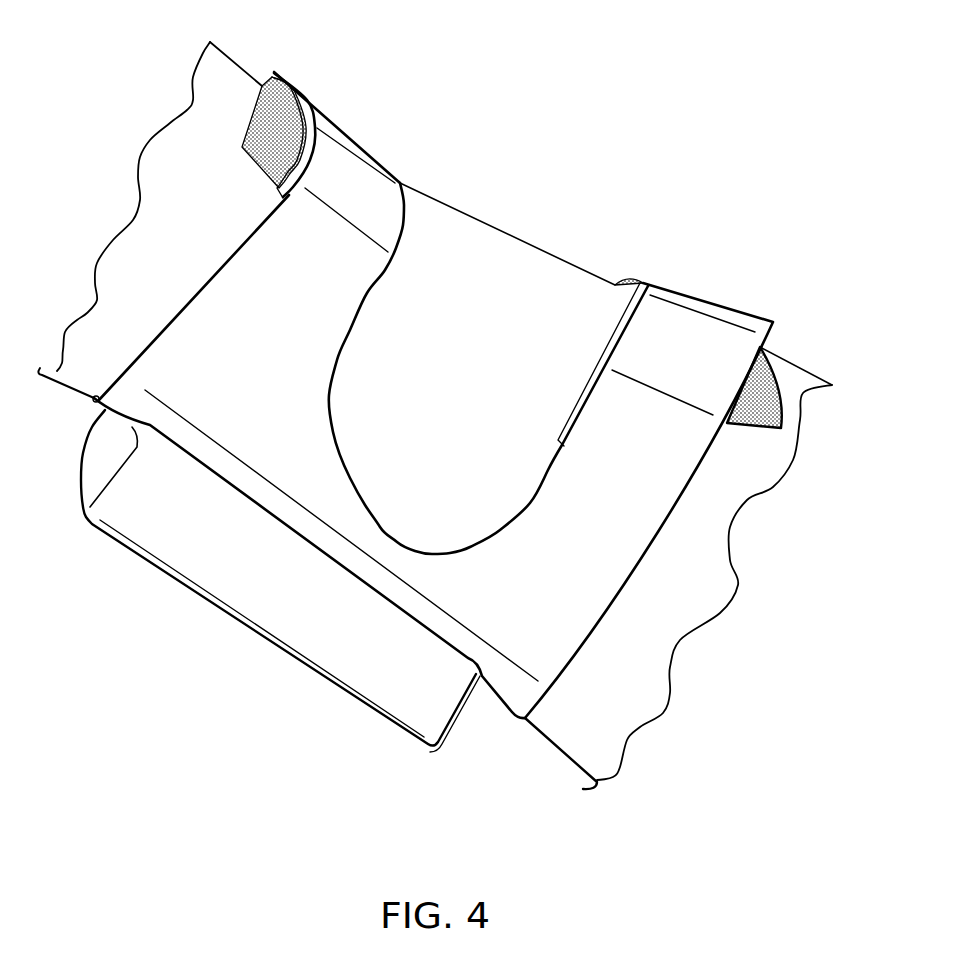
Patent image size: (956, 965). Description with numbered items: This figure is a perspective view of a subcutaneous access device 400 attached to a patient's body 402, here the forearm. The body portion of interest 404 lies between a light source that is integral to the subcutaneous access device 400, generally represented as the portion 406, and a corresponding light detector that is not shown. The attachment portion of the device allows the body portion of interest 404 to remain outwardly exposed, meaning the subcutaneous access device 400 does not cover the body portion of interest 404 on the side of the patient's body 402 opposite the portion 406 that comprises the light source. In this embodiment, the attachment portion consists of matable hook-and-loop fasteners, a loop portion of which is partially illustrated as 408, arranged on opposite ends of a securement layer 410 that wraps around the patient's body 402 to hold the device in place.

The subcutaneous access device 400 is at (152, 621).
The patient's body 402 is at (197, 137).
The body portion of interest 404 is at (497, 263).
The portion comprising the light source 406 is at (307, 623).
The loop portion of hook-and-loop fastener 408 is at (257, 115).
The securement layer 410 is at (550, 637).